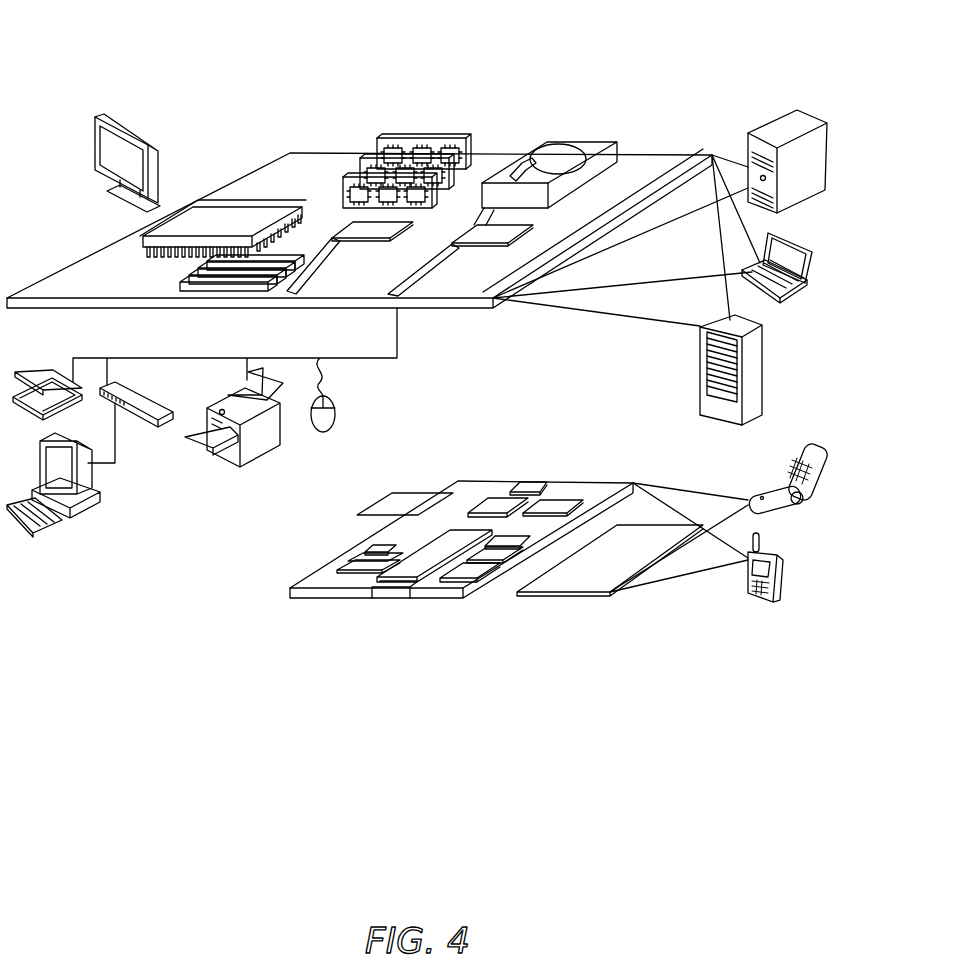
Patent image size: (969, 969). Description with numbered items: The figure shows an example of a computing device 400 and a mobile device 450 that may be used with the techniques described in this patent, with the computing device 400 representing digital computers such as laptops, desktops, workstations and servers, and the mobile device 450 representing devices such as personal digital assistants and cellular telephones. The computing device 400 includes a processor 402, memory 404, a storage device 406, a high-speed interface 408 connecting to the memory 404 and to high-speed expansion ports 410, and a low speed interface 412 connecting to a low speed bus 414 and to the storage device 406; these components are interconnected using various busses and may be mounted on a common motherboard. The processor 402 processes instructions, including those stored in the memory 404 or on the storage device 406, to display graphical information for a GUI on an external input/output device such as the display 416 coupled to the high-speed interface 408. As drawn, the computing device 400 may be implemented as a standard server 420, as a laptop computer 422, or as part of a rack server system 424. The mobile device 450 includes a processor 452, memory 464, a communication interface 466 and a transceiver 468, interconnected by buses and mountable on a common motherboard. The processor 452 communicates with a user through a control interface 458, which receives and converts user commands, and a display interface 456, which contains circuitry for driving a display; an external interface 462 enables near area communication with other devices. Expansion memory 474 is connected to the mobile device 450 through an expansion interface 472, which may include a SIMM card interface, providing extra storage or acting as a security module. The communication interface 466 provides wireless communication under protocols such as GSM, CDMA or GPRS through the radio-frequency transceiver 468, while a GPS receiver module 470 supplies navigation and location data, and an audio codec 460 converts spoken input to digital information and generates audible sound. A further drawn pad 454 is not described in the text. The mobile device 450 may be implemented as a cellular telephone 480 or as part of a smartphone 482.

The computing device 400 is at (130, 70).
The processor 402 is at (143, 233).
The memory 404 is at (412, 133).
The storage device 406 is at (600, 135).
The high-speed interface 408 is at (350, 222).
The high-speed expansion ports 410 is at (85, 262).
The low speed interface 412 is at (473, 225).
The low speed bus 414 is at (410, 292).
The display 416 is at (147, 138).
The standard server 420 is at (767, 120).
The laptop computer 422 is at (780, 298).
The rack server system 424 is at (698, 357).
The mobile device 450 is at (272, 622).
The processor 452 is at (413, 567).
The connector pad 454 is at (617, 593).
The display interface 456 is at (470, 580).
The control interface 458 is at (480, 562).
The audio codec 460 is at (510, 543).
The external interface 462 is at (387, 592).
The memory 464 is at (360, 557).
The communication interface 466 is at (498, 502).
The transceiver 468 is at (558, 502).
The GPS receiver module 470 is at (537, 482).
The expansion interface 472 is at (455, 493).
The expansion memory 474 is at (382, 509).
The cellular telephone 480 is at (782, 460).
The smartphone 482 is at (747, 580).